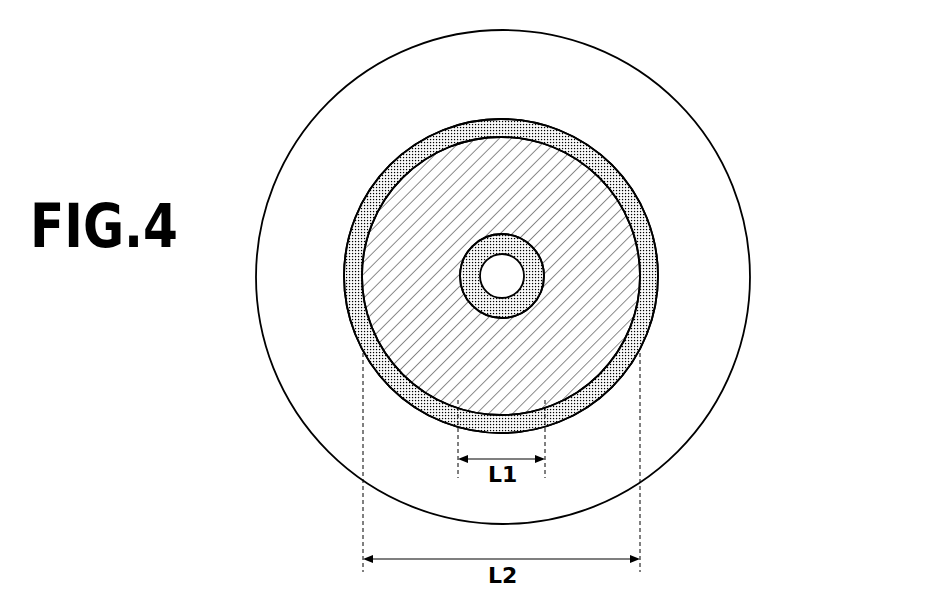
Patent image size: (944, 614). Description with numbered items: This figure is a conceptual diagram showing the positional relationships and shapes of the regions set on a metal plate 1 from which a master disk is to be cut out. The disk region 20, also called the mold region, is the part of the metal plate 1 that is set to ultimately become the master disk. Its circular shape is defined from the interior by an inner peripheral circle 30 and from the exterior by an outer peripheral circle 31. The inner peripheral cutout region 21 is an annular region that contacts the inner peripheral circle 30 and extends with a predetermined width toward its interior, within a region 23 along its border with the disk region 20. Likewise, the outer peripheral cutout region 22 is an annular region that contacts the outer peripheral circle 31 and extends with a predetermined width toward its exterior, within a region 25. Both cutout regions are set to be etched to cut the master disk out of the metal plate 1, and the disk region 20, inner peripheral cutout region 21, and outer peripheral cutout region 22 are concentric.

The metal plate 1 is at (701, 52).
The disk region 20 is at (422, 177).
The inner peripheral cutout region 21 is at (480, 247).
The outer peripheral cutout region 22 is at (462, 122).
The region 23 is at (510, 265).
The region 25 is at (680, 123).
The inner peripheral circle 30 is at (545, 252).
The outer peripheral circle 31 is at (623, 202).